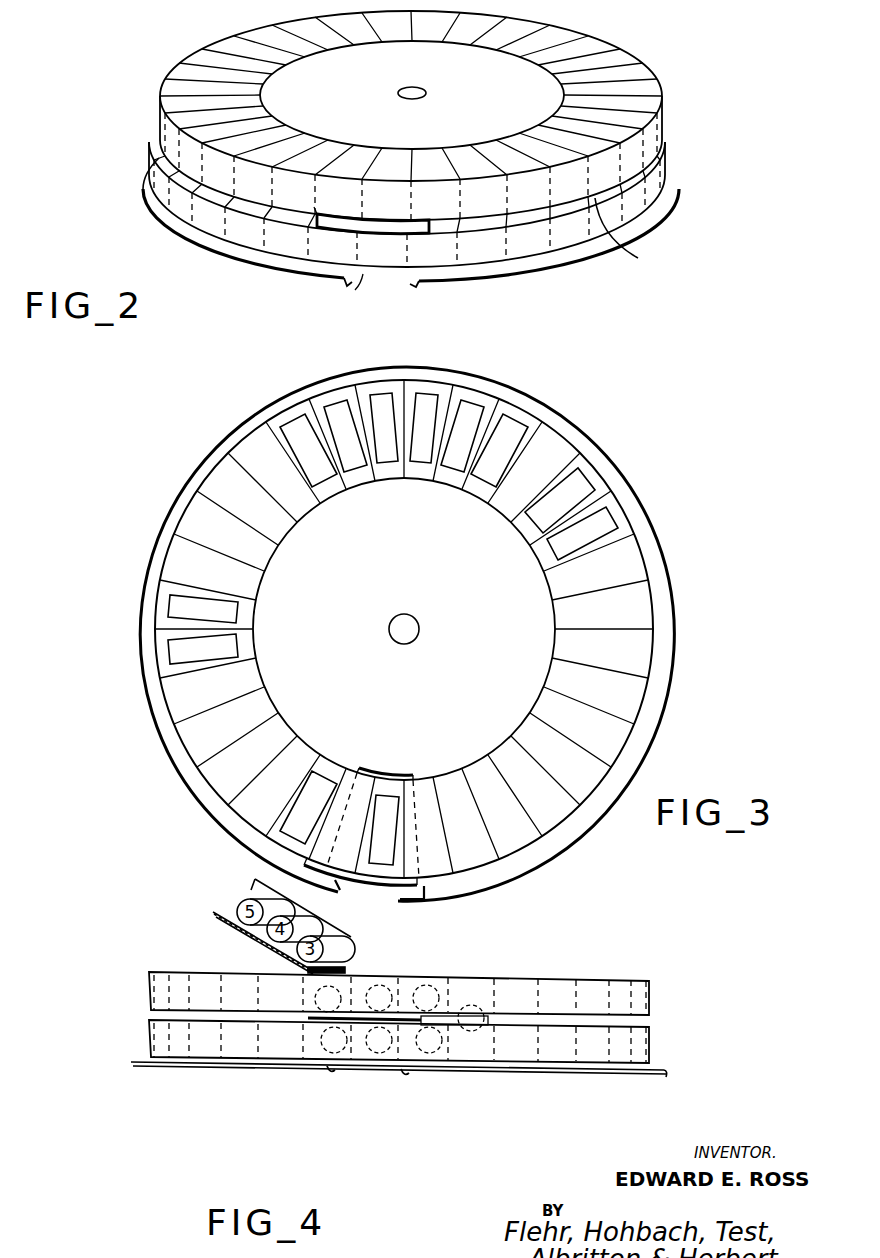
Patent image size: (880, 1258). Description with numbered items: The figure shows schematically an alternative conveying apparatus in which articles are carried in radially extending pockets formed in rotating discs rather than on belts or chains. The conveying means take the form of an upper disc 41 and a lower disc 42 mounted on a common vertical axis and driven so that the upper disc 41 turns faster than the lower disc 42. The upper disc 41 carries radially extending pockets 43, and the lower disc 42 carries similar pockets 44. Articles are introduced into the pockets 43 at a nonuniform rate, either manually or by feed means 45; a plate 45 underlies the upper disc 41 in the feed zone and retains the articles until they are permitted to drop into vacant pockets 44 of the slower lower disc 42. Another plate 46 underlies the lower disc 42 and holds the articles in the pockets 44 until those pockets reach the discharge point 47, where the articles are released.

In FIG. 2, the upper disc 41 is at (668, 109).
In FIG. 3, the upper disc 41 is at (655, 549).
In FIG. 4, the upper disc 41 is at (660, 998).
In FIG. 2, the lower disc 42 is at (670, 180).
In FIG. 4, the lower disc 42 is at (660, 1046).
In FIG. 2, the radially extending pockets 43 is at (622, 58).
In FIG. 3, the radially extending pockets 43 is at (637, 661).
In FIG. 2, the pockets 44 is at (633, 238).
In FIG. 2, the plate 45 is at (393, 233).
In FIG. 3, the plate 45 is at (353, 881).
In FIG. 4, the plate 45 is at (398, 1017).
In FIG. 2, the plate 46 is at (529, 279).
In FIG. 3, the plate 46 is at (152, 533).
In FIG. 4, the plate 46 is at (571, 1073).
In FIG. 2, the discharge point 47 is at (361, 280).
In FIG. 3, the discharge point 47 is at (390, 898).
In FIG. 4, the discharge point 47 is at (366, 1074).